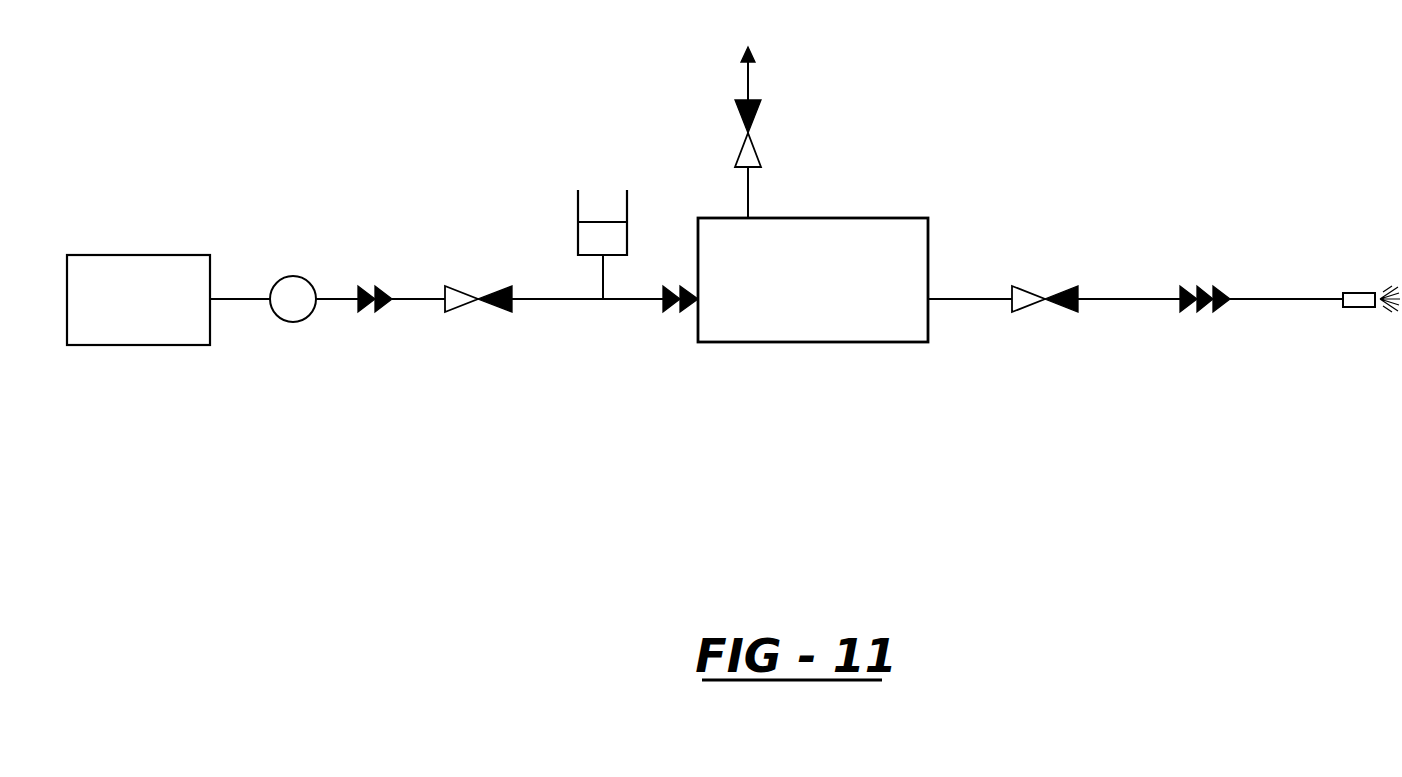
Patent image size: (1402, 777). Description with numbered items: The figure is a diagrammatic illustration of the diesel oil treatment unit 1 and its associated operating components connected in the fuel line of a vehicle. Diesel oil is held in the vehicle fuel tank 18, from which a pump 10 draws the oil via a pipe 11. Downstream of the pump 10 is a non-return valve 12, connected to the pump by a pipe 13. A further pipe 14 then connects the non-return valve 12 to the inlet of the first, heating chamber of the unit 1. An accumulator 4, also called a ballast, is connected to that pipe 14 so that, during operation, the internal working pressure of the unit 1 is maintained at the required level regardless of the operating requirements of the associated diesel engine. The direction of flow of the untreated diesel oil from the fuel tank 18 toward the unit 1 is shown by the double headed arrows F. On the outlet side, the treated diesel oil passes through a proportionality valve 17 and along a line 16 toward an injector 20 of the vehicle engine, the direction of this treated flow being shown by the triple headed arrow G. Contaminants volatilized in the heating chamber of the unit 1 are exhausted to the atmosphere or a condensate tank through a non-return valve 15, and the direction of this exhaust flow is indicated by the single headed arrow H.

The diesel oil treatment unit 1 is at (810, 287).
The accumulator 4 is at (588, 238).
The pump 10 is at (296, 276).
The pipe 11 is at (236, 300).
The non-return valve 12 is at (466, 306).
The pipe 13 is at (418, 298).
The pipe 14 is at (626, 300).
The non-return valve 15 is at (756, 148).
The fuel line 16 is at (962, 300).
The proportionality valve 17 is at (1028, 290).
The fuel tank 18 is at (123, 345).
The injector 20 is at (1357, 293).
The double headed arrows F is at (372, 312).
The triple headed arrow G is at (1203, 312).
The single headed arrow H is at (748, 80).